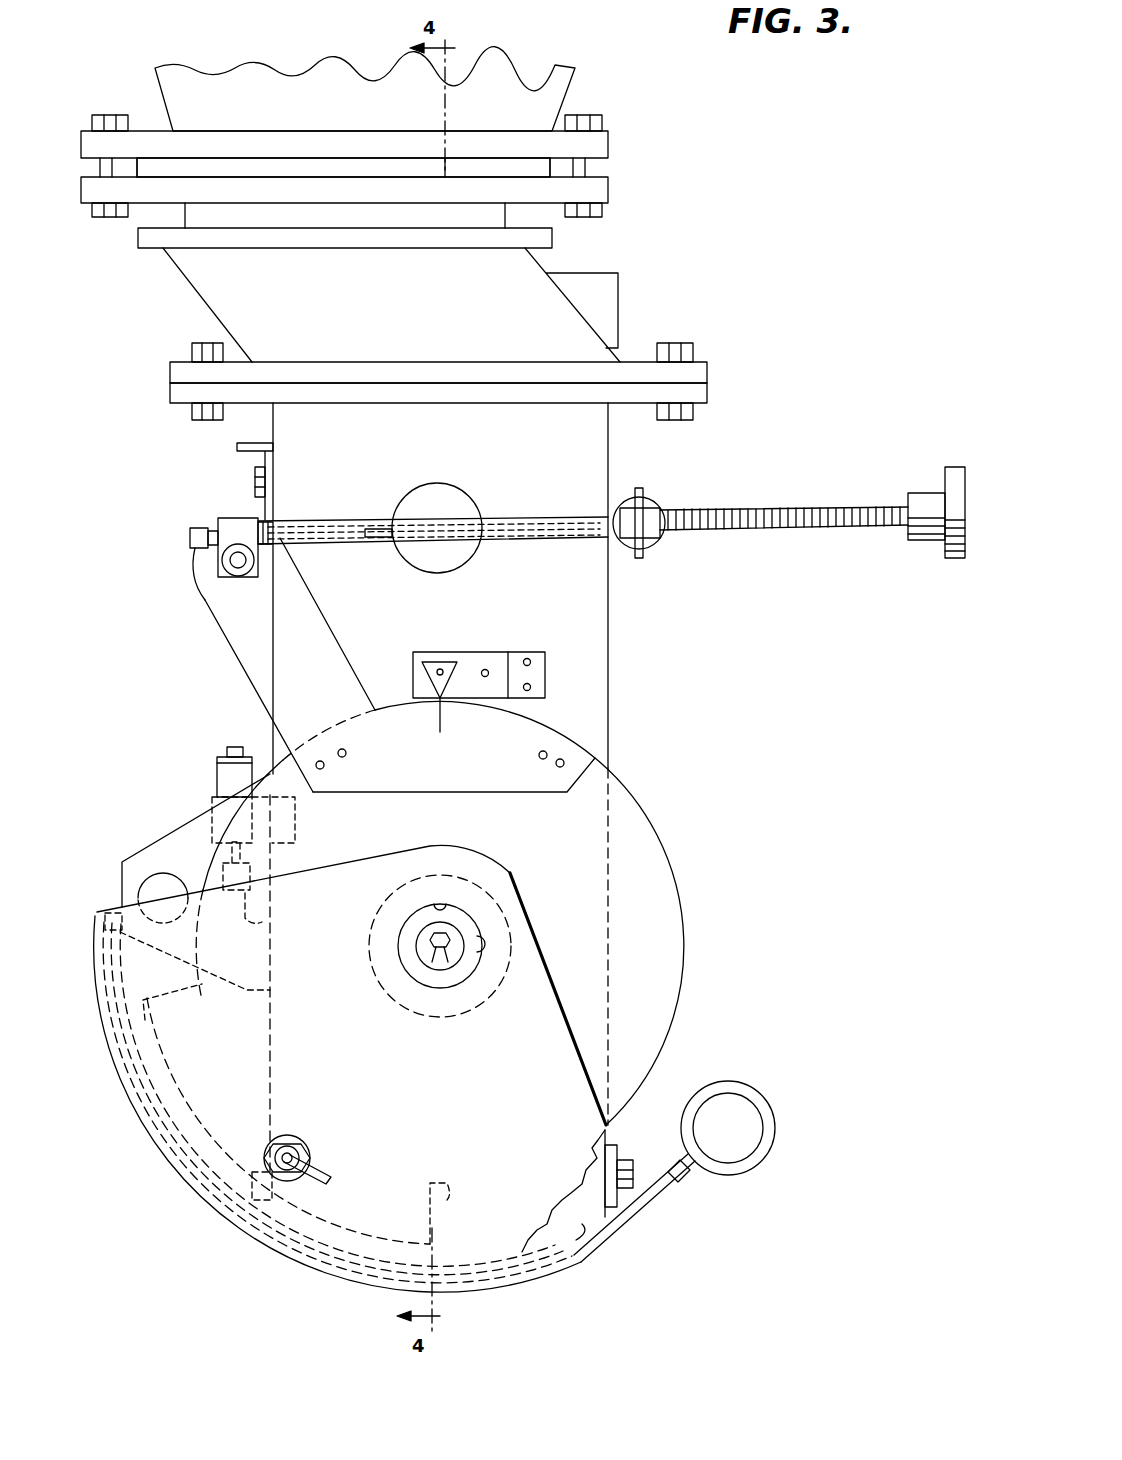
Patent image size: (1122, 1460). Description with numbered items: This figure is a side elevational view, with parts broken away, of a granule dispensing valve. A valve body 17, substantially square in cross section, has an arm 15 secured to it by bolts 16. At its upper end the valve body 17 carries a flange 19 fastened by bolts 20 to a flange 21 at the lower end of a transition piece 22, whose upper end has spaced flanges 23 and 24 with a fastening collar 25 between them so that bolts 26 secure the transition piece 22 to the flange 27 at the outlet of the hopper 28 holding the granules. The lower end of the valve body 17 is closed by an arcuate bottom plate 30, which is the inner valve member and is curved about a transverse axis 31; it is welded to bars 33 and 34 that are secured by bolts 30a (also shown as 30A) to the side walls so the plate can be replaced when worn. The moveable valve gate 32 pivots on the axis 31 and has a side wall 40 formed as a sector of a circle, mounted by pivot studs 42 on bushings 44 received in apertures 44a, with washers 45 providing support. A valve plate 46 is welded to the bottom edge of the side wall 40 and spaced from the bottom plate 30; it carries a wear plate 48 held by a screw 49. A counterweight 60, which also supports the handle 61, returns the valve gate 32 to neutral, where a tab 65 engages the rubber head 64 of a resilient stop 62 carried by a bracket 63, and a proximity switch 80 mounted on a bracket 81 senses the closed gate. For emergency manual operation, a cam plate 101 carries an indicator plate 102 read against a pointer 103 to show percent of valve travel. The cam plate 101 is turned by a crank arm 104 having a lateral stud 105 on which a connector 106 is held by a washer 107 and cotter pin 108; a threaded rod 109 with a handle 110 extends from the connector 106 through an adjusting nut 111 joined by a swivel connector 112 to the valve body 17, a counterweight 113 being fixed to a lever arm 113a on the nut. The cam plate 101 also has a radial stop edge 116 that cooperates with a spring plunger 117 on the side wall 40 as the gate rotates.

The arm 15 is at (240, 446).
The bolts 16 is at (255, 480).
The valve body 17 is at (514, 604).
The flange 19 is at (700, 393).
The bolts 20 is at (695, 345).
The flange 21 is at (698, 372).
The transition piece 22 is at (410, 310).
The flange 23 is at (548, 241).
The flange 24 is at (510, 165).
The fastening collar 25 is at (602, 195).
The bolts 26 is at (602, 172).
The flange 27 is at (608, 148).
The hopper 28 is at (548, 102).
The bottom plate 30 is at (580, 1255).
The bolts 30A is at (630, 1172).
The bolts 30a is at (257, 1186).
The transverse axis 31 is at (422, 962).
The valve gate 32 is at (578, 1046).
The bar 33 is at (612, 1150).
The bar 34 is at (225, 1207).
The side wall 40 is at (392, 1081).
The pivot studs 42 is at (442, 962).
The bushings 44 is at (460, 918).
The apertures 44a is at (482, 948).
The washers 45 is at (506, 872).
The valve plate 46 is at (505, 1293).
The wear plate 48 is at (640, 1228).
The screw 49 is at (685, 1190).
The counterweight 60 is at (775, 1118).
The handle 61 is at (725, 1118).
The stop 62 is at (215, 770).
The bracket 63 is at (212, 810).
The head 64 is at (270, 878).
The tab 65 is at (270, 922).
The proximity switch 80 is at (150, 890).
The bracket 81 is at (168, 855).
The cam plate 101 is at (660, 877).
The indicator plate 102 is at (450, 793).
The pointer 103 is at (413, 687).
The crank arm 104 is at (237, 630).
The lateral stud 105 is at (196, 572).
The connector 106 is at (232, 528).
The washer 107 is at (200, 548).
The cotter pin 108 is at (248, 572).
The threaded rod 109 is at (770, 507).
The handle 110 is at (930, 527).
The adjusting nut 111 is at (660, 540).
The swivel connector 112 is at (656, 510).
The counterweight 113 is at (465, 493).
The lever arm 113a is at (540, 518).
The radial stop edge 116 is at (442, 1185).
The spring plunger 117 is at (320, 1183).